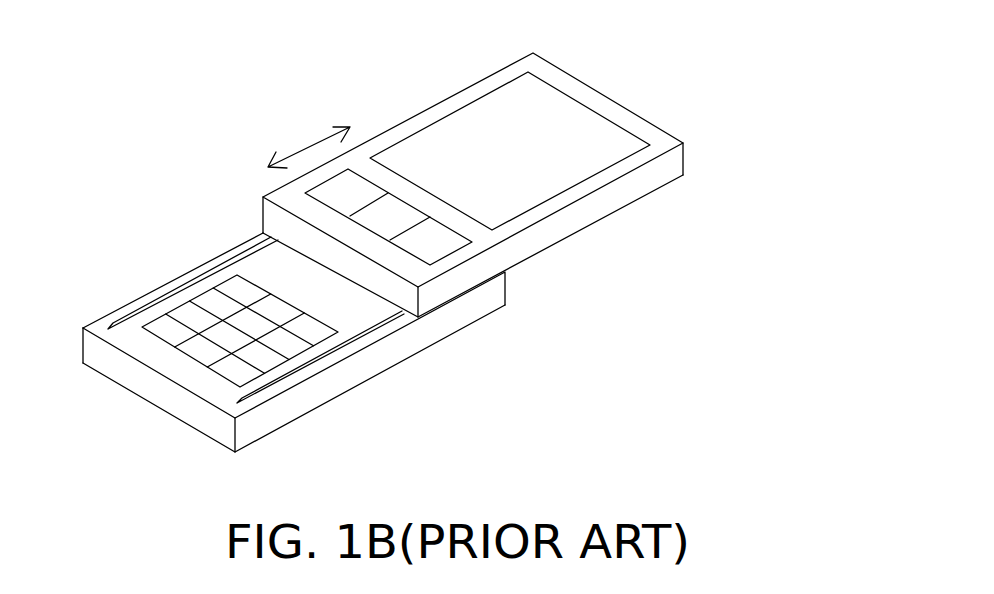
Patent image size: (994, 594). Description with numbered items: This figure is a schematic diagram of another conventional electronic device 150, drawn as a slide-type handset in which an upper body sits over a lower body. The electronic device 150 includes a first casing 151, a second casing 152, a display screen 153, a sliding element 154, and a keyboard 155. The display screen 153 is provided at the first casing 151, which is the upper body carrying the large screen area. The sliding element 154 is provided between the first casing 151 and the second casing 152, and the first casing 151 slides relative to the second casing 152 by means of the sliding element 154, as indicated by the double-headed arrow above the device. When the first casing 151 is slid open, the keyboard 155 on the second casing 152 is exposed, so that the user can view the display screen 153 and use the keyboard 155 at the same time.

The electronic device 150 is at (474, 258).
The first casing 151 is at (657, 152).
The second casing 152 is at (375, 365).
The display screen 153 is at (562, 175).
The sliding element 154 is at (397, 318).
The keyboard 155 is at (272, 362).